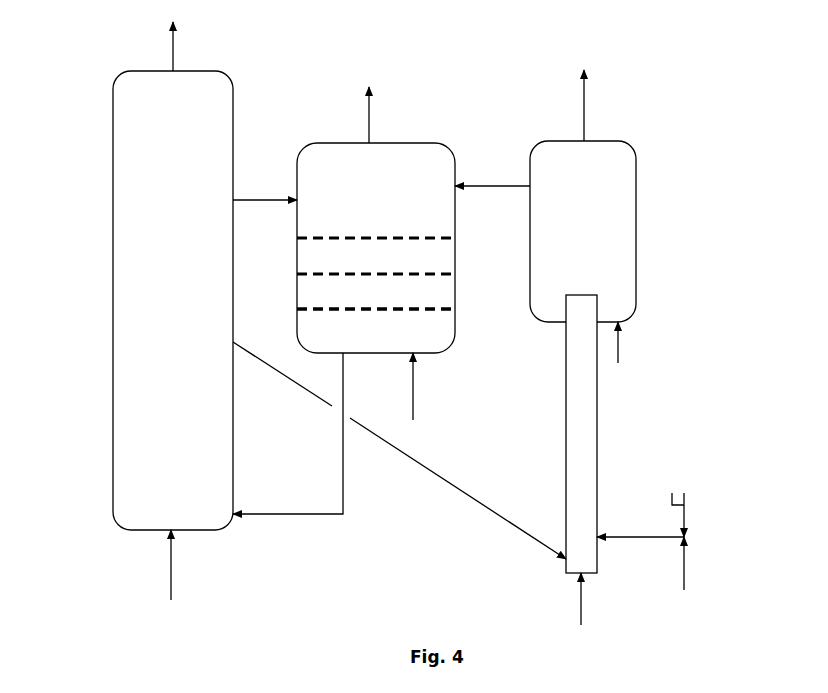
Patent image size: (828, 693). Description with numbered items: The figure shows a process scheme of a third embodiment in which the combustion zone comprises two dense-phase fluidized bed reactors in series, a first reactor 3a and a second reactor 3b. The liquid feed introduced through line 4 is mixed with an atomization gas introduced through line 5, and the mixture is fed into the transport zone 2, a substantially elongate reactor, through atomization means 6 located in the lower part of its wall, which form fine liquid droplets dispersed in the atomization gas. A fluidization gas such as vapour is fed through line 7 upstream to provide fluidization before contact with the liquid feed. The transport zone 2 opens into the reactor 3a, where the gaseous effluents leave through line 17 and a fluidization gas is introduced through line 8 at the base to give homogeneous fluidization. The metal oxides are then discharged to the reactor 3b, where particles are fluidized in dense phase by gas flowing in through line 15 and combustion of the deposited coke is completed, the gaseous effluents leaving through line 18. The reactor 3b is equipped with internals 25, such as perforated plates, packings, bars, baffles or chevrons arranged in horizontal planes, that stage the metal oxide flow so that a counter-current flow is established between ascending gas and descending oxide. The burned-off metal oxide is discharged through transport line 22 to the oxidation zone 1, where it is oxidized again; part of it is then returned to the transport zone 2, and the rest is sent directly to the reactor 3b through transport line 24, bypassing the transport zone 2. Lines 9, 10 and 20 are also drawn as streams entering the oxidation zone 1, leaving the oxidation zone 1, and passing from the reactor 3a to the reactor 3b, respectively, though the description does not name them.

The oxidation zone 1 is at (173, 300).
The transport zone 2 is at (581, 434).
The first dense-phase fluidized bed reactor 3a is at (583, 231).
The second dense-phase fluidized bed reactor 3b is at (376, 248).
The liquid feed line 4 is at (684, 573).
The atomization gas line 5 is at (663, 512).
The atomization means 6 is at (620, 537).
The fluidization gas line 7 is at (581, 595).
The fluidization gas line 8 is at (638, 342).
The feed stream to column 1 9 is at (190, 565).
The overhead stream from column 1 10 is at (195, 46).
The fluidization gas line 15 is at (433, 386).
The gaseous effluent line 17 is at (611, 105).
The gaseous effluent line 18 is at (395, 115).
The stream from separator 3a to 3b 20 is at (492, 172).
The transport line 22 is at (288, 433).
The transport line 24 is at (265, 187).
The internals 25 is at (413, 306).